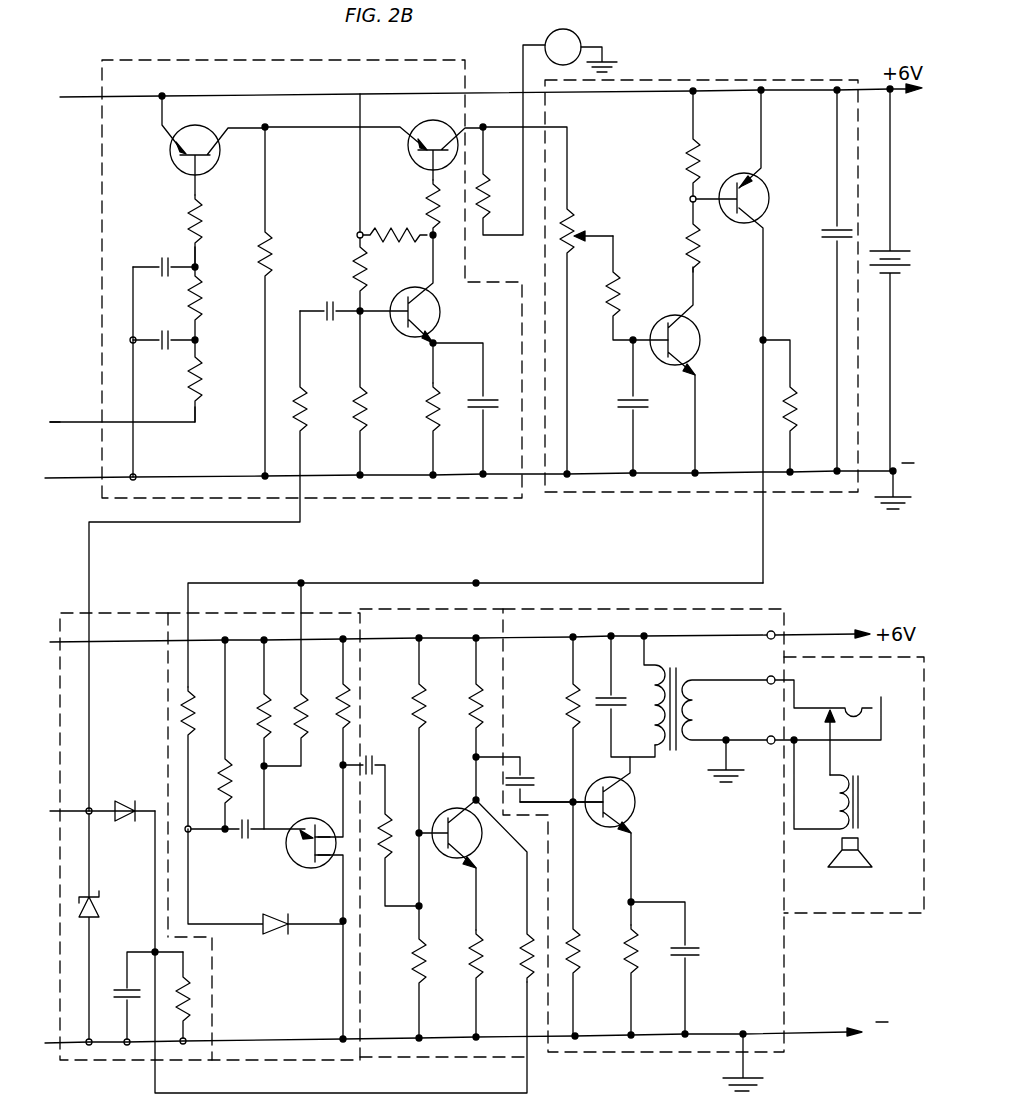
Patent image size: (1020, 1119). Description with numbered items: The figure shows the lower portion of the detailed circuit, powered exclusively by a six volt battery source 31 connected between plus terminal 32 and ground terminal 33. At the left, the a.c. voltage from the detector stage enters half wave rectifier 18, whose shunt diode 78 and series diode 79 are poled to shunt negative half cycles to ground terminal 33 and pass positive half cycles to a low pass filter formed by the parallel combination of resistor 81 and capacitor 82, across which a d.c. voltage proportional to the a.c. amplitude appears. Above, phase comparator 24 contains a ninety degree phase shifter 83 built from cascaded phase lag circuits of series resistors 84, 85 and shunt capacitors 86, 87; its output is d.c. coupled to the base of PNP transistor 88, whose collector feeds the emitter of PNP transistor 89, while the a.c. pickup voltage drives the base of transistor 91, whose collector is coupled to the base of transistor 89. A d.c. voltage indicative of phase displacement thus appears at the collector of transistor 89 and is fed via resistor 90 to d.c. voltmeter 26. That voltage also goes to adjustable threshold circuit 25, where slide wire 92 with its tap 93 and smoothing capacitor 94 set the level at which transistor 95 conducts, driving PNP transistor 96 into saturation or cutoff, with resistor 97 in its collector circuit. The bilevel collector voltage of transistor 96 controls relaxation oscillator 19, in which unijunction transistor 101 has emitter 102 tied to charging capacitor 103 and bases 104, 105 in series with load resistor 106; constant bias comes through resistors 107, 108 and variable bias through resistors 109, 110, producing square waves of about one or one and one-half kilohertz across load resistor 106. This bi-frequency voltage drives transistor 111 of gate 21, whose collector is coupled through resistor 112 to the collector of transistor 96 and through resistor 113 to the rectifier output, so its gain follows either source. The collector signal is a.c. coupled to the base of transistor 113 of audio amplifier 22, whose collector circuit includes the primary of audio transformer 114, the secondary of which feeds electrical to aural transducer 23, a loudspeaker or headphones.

The half wave rectifier 18 is at (117, 613).
The relaxation oscillator 19 is at (243, 612).
The gate 21 is at (453, 1057).
The audio amplifier 22 is at (781, 608).
The electrical to aural transducer 23 is at (873, 914).
The phase comparator 24 is at (243, 60).
The adjustable threshold circuit 25 is at (718, 80).
The d.c. voltmeter 26 is at (584, 33).
The battery source 31 is at (897, 250).
The plus terminal 32 is at (893, 94).
The ground terminal 33 is at (890, 468).
The shunt diode 78 is at (100, 899).
The series diode 79 is at (126, 802).
The resistor 81 is at (195, 995).
The capacitor 82 is at (119, 988).
The 90° phase shifter 83 is at (118, 362).
The series resistor 84 is at (203, 392).
The series resistor 85 is at (204, 306).
The shunt capacitor 86 is at (158, 331).
The shunt capacitor 87 is at (156, 262).
The PNP transistor 88 is at (219, 158).
The PNP transistor 89 is at (415, 167).
The resistor 90 is at (489, 176).
The transistor 91 is at (443, 313).
The slide wire 92 is at (570, 212).
The tap 93 is at (584, 234).
The smoothing capacitor 94 is at (642, 407).
The transistor 95 is at (699, 348).
The PNP transistor 96 is at (770, 207).
The resistor 97 is at (796, 406).
The unijunction transistor 101 is at (300, 832).
The emitter 102 is at (303, 822).
The charging capacitor 103 is at (244, 840).
The base 104 is at (322, 826).
The base 105 is at (267, 881).
The load resistor 106 is at (348, 690).
The resistor 107 is at (232, 780).
The resistor 108 is at (255, 695).
The resistor 109 is at (180, 702).
The resistor 110 is at (296, 692).
The transistor 111 is at (457, 808).
The resistor 112 is at (377, 766).
The transistor 113 is at (525, 945).
The audio transformer 114 is at (679, 752).